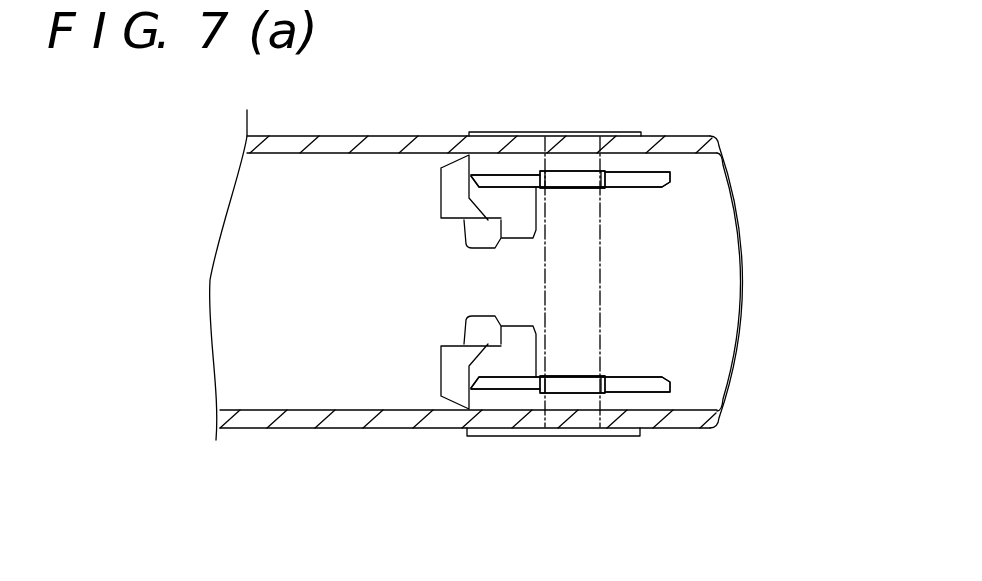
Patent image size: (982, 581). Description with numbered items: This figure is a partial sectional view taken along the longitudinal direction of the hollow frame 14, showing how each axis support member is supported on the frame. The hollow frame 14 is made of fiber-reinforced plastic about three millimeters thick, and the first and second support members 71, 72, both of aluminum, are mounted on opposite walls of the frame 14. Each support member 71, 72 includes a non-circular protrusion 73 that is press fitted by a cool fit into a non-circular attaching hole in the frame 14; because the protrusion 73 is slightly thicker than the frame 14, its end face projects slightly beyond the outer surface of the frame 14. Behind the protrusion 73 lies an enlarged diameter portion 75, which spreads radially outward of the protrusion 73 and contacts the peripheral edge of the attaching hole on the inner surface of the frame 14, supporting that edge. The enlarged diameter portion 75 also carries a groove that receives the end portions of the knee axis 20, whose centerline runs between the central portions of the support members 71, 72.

The hollow frame 14 is at (334, 146).
The knee axis 20 is at (545, 271).
The first support member 71 is at (695, 176).
The second support member 72 is at (674, 363).
The protrusion 73 is at (533, 133).
The enlarged diameter portion 75 is at (632, 173).